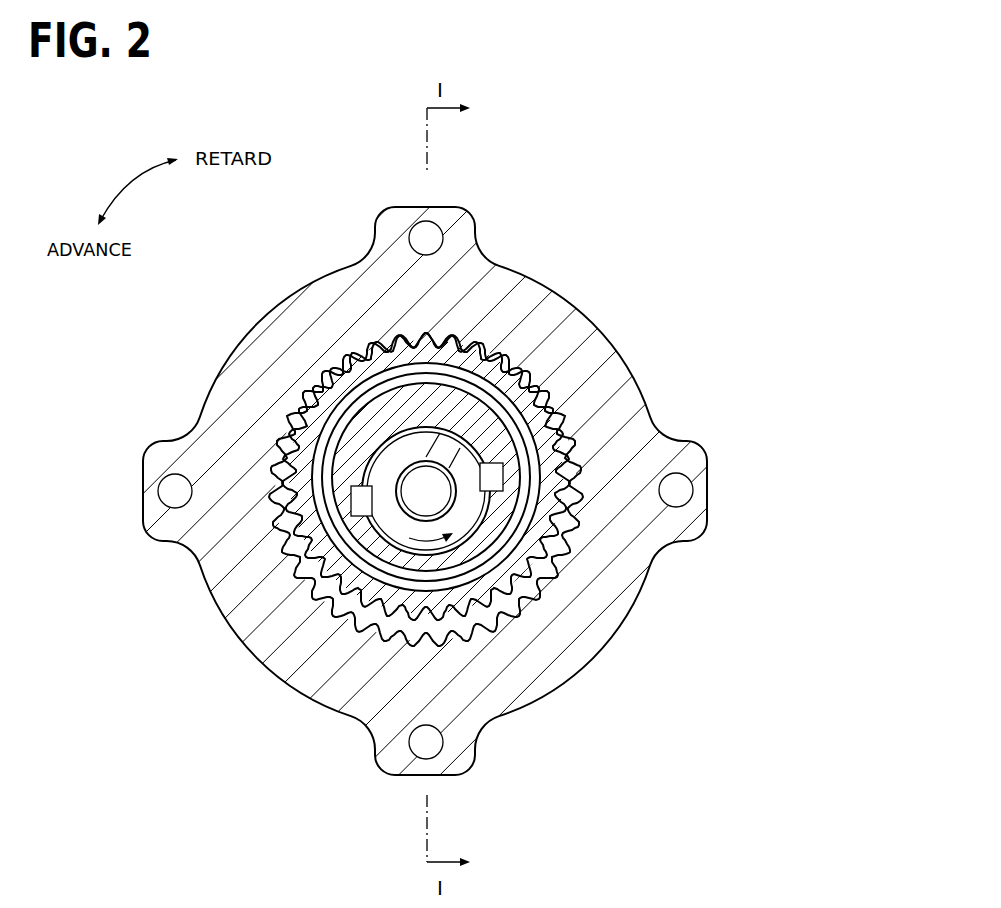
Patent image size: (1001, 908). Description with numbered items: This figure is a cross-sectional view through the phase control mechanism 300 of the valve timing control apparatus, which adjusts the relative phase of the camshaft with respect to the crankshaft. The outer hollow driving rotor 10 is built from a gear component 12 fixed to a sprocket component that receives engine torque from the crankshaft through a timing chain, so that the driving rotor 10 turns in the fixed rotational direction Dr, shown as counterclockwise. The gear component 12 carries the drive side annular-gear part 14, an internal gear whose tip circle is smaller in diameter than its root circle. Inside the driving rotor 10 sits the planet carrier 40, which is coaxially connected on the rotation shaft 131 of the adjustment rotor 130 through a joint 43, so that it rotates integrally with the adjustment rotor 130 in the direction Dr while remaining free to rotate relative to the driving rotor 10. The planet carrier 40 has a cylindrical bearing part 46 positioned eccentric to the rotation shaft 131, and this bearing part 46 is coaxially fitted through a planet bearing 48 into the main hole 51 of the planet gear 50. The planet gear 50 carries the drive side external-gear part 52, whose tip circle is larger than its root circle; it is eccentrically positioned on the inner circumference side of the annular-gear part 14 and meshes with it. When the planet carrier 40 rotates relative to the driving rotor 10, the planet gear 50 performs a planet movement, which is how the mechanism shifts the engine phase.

The phase control mechanism 300 is at (500, 454).
The driving rotor 10 is at (500, 454).
The gear component 12 is at (305, 317).
The drive side annular-gear part 14 is at (303, 408).
The planet gear 50 is at (500, 454).
The drive side external-gear part 52 is at (290, 436).
The main hole 51 is at (460, 368).
The planet bearing 48 is at (533, 523).
The joint 43 is at (460, 523).
The bearing part 46 is at (340, 451).
The planet carrier 40 is at (317, 471).
The adjustment rotor 130 is at (363, 358).
The rotation shaft 131 is at (405, 462).
The fixed rotational direction Dr is at (405, 543).